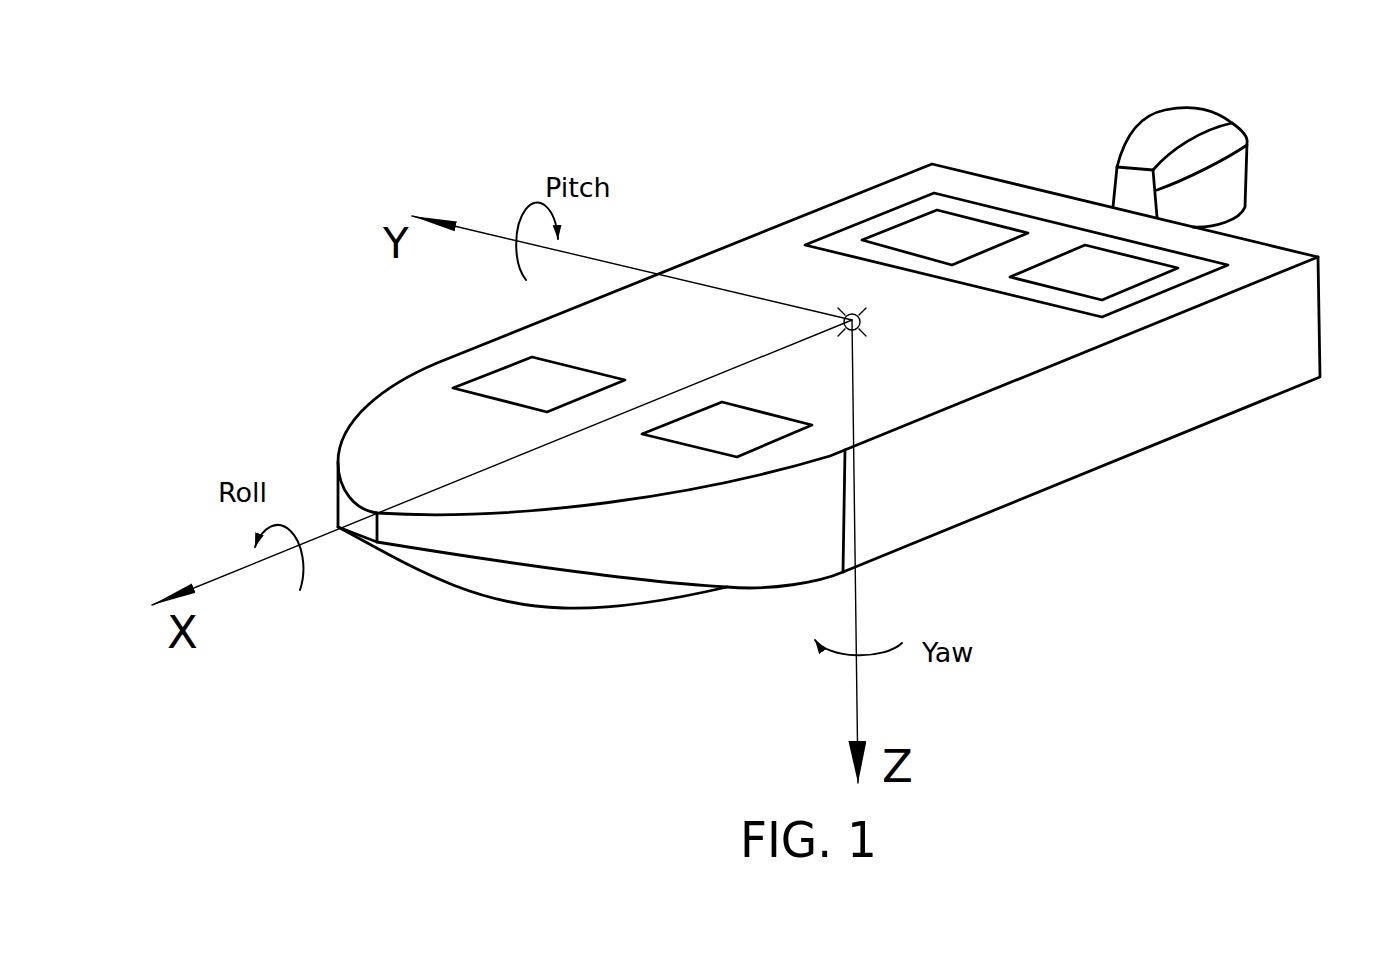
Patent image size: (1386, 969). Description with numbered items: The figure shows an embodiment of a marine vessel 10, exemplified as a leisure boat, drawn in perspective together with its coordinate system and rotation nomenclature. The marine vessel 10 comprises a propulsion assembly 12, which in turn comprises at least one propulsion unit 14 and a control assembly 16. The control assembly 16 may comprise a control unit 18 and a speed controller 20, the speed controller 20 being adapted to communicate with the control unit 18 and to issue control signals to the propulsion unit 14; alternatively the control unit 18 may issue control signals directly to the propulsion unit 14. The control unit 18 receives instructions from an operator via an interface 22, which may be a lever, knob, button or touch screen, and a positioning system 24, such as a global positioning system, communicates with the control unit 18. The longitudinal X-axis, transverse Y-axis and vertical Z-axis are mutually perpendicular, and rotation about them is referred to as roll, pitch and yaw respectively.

The marine vessel 10 is at (755, 126).
The propulsion assembly 12 is at (1243, 363).
The propulsion unit 14 is at (1173, 132).
The control assembly 16 is at (1007, 207).
The control unit 18 is at (957, 248).
The speed controller 20 is at (1110, 284).
The interface 22 is at (551, 397).
The positioning system 24 is at (741, 442).